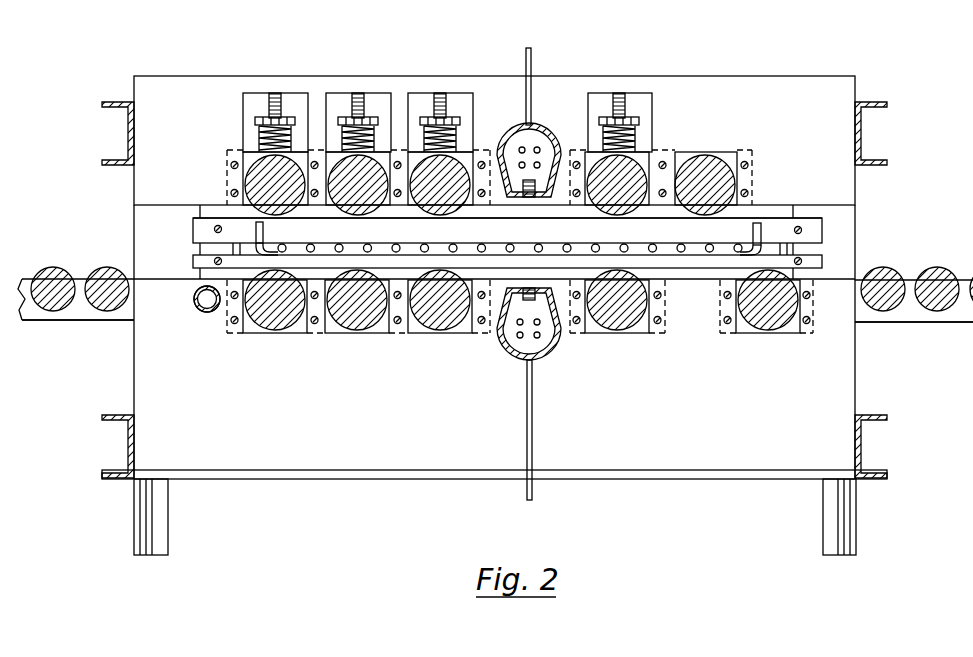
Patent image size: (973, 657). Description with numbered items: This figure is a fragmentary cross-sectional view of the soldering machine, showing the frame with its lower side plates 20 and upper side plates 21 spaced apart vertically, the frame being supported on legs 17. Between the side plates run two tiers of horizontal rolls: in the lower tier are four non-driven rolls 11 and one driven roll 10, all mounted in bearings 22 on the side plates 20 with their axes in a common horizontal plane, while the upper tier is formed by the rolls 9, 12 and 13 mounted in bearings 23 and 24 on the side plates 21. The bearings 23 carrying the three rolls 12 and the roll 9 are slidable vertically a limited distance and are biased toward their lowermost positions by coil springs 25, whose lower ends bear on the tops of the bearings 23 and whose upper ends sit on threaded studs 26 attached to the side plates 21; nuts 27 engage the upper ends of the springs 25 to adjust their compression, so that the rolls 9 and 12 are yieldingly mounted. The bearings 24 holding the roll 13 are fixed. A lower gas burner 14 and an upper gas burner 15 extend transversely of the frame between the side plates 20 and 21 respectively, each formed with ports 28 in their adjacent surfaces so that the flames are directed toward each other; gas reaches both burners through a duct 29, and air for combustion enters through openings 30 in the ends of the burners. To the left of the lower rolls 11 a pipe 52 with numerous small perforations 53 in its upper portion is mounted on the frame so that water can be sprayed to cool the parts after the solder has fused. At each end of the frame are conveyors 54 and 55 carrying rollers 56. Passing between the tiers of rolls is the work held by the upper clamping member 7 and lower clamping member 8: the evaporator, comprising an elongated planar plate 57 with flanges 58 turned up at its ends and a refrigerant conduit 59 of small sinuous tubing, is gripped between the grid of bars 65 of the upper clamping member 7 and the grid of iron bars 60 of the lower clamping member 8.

The upper clamping member 7 is at (762, 216).
The lower clamping member 8 is at (718, 268).
The upper horizontal roll 9 is at (630, 173).
The driven roll 10 is at (625, 330).
The non-driven lower rolls 11 is at (265, 330).
The upper horizontal rolls 12 is at (250, 182).
The upper horizontal roll 13 is at (728, 182).
The lower gas burner 14 is at (515, 355).
The upper gas burner 15 is at (532, 130).
The legs 17 is at (850, 523).
The lower side plates 20 is at (758, 465).
The upper side plates 21 is at (781, 85).
The bearings 22 is at (299, 333).
The bearings 23 is at (466, 153).
The bearings 24 is at (725, 152).
The coil springs 25 is at (636, 135).
The threaded studs 26 is at (622, 98).
The nuts 27 is at (632, 119).
The ports 28 is at (531, 200).
The duct 29 is at (531, 52).
The openings 30 is at (540, 150).
The pipe 52 is at (197, 306).
The perforations 53 is at (201, 290).
The conveyor 54 is at (920, 318).
The conveyor 55 is at (98, 320).
The rollers 56 is at (110, 272).
The elongated plate 57 is at (598, 248).
The flanges 58 is at (752, 232).
The refrigerant conduit 59 is at (428, 246).
The iron bars 60 is at (820, 260).
The bars 65 is at (818, 229).